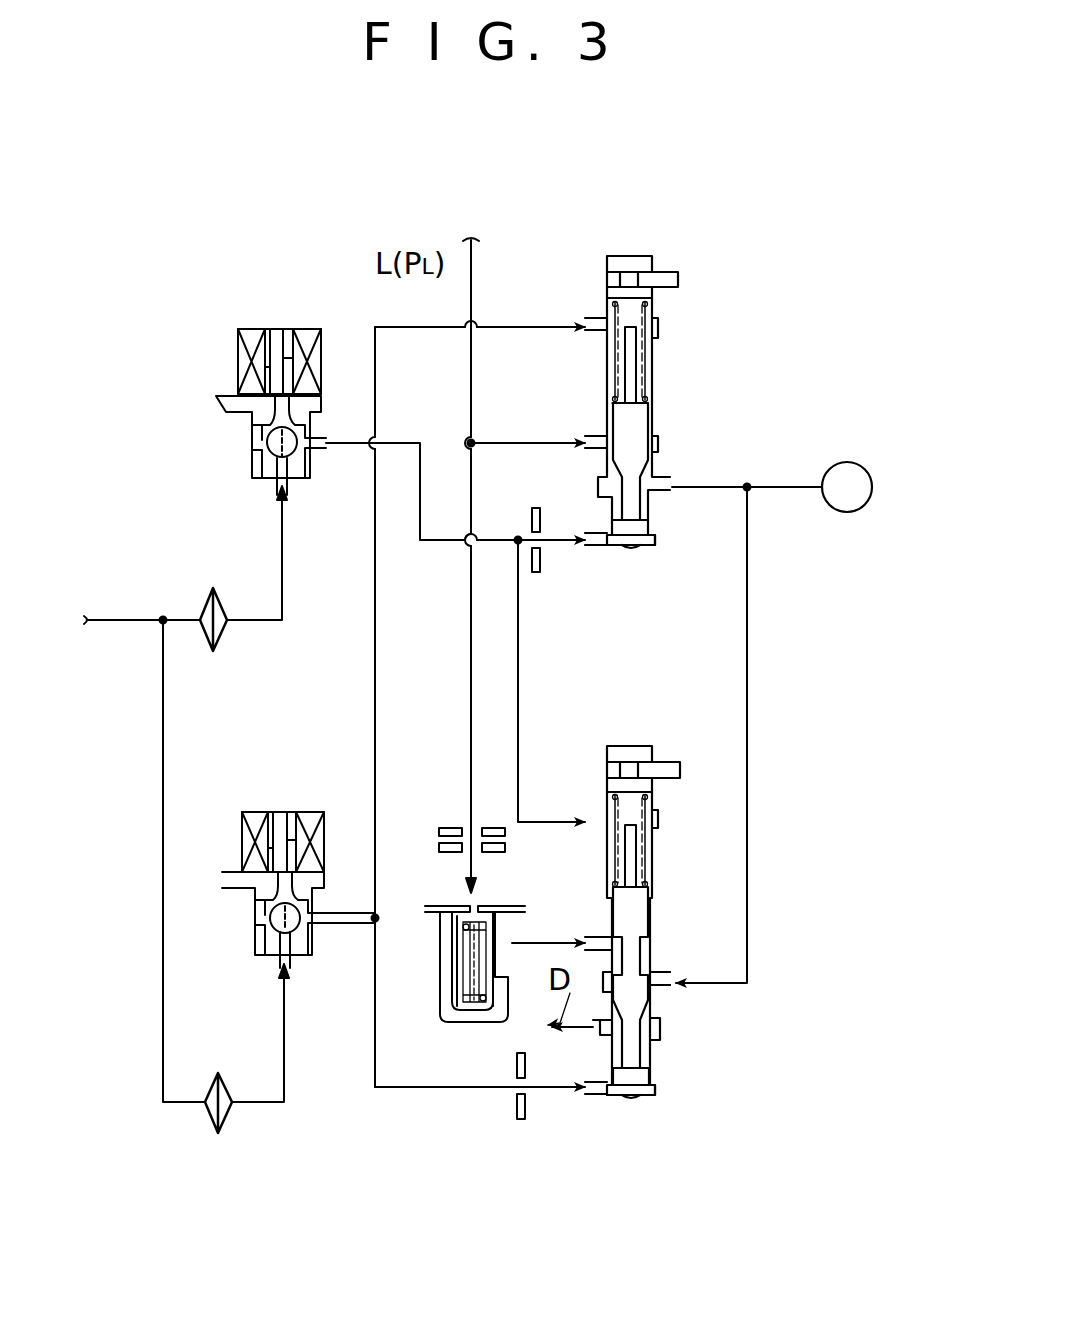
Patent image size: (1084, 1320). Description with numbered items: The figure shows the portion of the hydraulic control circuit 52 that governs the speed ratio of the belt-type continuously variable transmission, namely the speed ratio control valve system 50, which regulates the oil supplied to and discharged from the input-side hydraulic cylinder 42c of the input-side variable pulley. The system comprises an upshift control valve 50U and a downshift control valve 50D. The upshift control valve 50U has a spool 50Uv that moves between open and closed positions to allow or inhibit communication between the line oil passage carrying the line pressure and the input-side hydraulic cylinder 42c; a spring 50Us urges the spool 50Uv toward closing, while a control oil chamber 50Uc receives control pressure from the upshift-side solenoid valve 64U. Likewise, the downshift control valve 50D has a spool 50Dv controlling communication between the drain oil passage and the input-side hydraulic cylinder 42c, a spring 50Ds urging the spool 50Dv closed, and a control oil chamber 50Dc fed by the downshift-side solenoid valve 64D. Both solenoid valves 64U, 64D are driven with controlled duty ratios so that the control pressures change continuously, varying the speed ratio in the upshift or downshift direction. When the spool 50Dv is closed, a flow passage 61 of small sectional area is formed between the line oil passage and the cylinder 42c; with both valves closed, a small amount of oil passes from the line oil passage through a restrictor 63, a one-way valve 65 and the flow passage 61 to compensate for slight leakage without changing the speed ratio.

The hydraulic control circuit 52 is at (775, 143).
The speed ratio control valve system 50 is at (690, 218).
The upshift control valve 50U is at (682, 445).
The downshift control valve 50D is at (686, 951).
The spring 50Us is at (648, 302).
The spring 50Ds is at (646, 797).
The spool 50Uv is at (638, 459).
The spool 50Dv is at (640, 1000).
The control oil chamber 50Uc is at (648, 547).
The control oil chamber 50Dc is at (644, 1095).
The input-side hydraulic cylinder 42c is at (851, 463).
The upshift-side solenoid valve 64U is at (248, 313).
The downshift-side solenoid valve 64D is at (281, 793).
The restrictor 63 is at (446, 826).
The one-way valve 65 is at (445, 956).
The flow passage 61 is at (645, 975).